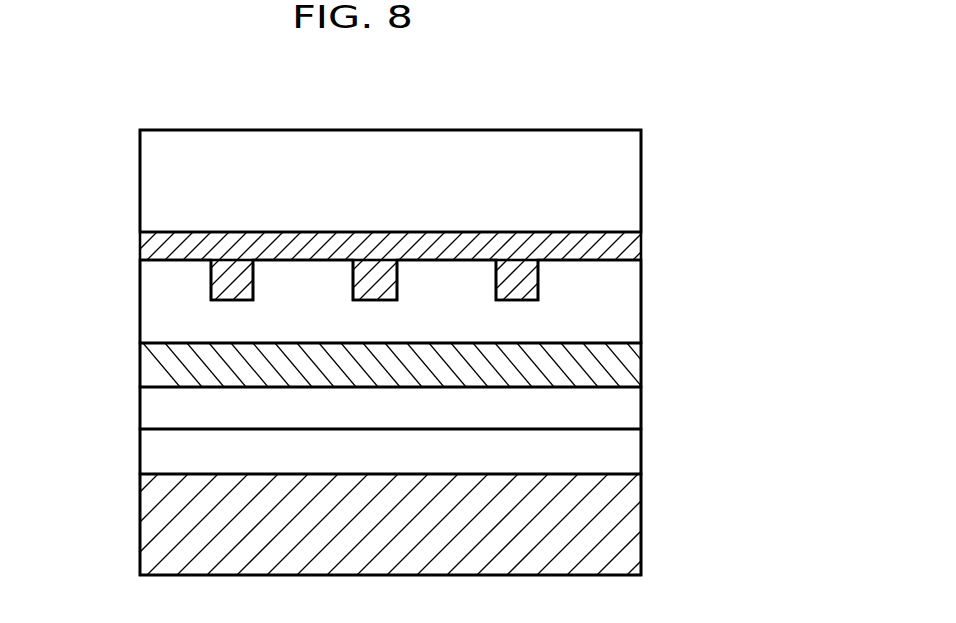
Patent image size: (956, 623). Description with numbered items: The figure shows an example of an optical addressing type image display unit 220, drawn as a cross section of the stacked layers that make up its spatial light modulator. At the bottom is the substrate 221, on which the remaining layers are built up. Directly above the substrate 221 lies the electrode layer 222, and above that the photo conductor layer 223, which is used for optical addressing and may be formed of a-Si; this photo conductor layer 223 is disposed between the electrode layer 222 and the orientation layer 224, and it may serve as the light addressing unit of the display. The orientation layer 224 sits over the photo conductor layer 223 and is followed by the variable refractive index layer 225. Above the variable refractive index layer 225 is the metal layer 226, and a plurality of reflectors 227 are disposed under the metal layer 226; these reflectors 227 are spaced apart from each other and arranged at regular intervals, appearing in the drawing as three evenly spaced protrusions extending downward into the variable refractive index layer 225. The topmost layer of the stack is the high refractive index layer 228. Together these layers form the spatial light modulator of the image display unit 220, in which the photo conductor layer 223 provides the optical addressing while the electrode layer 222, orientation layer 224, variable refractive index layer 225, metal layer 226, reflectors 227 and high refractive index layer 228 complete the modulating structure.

The image display unit 220 is at (625, 109).
The substrate 221 is at (163, 519).
The electrode layer 222 is at (163, 454).
The photo conductor layer 223 is at (163, 409).
The orientation layer 224 is at (163, 365).
The variable refractive index layer 225 is at (163, 322).
The metal layer 226 is at (165, 245).
The reflectors 227 is at (228, 290).
The high refractive index layer 228 is at (163, 177).